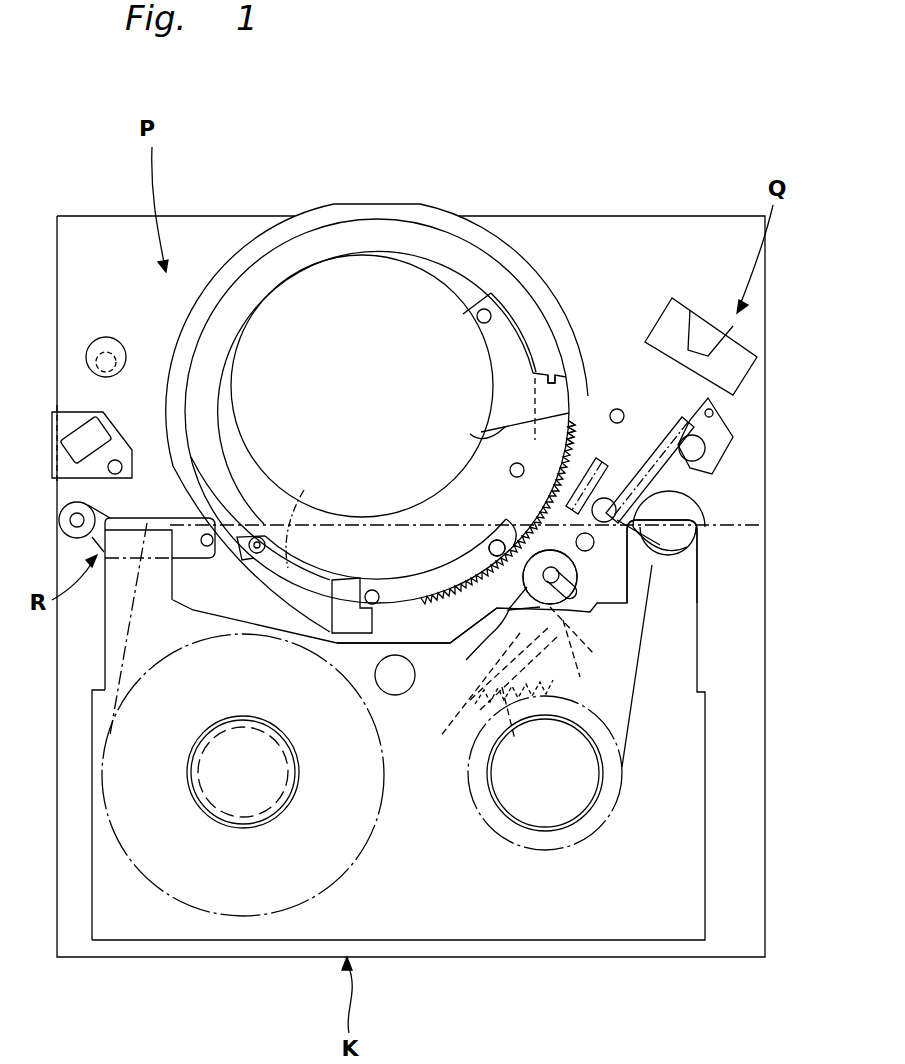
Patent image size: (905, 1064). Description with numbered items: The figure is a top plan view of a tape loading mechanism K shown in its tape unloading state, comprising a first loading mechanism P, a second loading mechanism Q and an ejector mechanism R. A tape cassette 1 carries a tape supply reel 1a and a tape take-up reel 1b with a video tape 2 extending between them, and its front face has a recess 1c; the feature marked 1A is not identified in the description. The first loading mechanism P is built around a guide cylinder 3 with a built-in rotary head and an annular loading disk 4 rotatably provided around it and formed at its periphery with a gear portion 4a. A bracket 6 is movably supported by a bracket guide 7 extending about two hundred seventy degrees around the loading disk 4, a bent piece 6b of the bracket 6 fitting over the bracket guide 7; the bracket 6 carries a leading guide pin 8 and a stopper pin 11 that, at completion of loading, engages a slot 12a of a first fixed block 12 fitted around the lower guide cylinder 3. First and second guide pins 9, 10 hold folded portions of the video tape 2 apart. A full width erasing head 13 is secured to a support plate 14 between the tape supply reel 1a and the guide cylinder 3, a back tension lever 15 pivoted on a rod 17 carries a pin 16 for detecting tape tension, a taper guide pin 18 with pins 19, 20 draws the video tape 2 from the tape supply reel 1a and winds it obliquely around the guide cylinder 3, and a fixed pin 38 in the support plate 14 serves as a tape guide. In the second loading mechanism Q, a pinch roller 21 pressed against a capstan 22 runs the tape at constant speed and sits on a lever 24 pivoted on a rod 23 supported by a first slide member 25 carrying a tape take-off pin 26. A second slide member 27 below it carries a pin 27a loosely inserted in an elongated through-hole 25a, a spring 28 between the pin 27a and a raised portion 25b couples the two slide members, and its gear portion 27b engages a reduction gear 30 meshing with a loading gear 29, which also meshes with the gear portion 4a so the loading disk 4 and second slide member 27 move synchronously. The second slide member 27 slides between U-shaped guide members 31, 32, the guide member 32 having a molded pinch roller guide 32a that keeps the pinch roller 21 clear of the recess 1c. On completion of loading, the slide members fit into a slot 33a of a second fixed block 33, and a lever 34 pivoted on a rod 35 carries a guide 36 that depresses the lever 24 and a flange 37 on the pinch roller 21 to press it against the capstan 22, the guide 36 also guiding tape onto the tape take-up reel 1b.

The tape cassette 1 is at (705, 850).
The supply reel 1A is at (220, 790).
The tape supply reel 1a is at (240, 810).
The tape take-up reel 1b is at (528, 815).
The recess 1c is at (423, 640).
The video tape 2 is at (622, 720).
The guide cylinder 3 is at (390, 272).
The loading disk 4 is at (533, 447).
The gear portion 4a is at (586, 412).
The bracket 6 is at (300, 562).
The bent piece 6b is at (345, 630).
The bracket guide 7 is at (513, 253).
The leading guide pin 8 is at (258, 537).
The first guide pin 9 is at (372, 590).
The second guide pin 10 is at (496, 541).
The stopper pin 11 is at (301, 514).
The first fixed block 12 is at (480, 434).
The slot 12a is at (552, 378).
The full width erasing head 13 is at (100, 428).
The support plate 14 is at (72, 512).
The back tension lever 15 is at (187, 553).
The pin 16 is at (207, 547).
The rod 17 is at (77, 540).
The taper guide pin 18 is at (112, 337).
The pin 19 is at (478, 320).
The pin 20 is at (512, 468).
The pinch roller 21 is at (572, 600).
The capstan 22 is at (618, 408).
The rod 23 is at (627, 490).
The lever 24 is at (584, 480).
The first slide member 25 is at (530, 667).
The elongated through-hole 25a is at (572, 645).
The raised portion 25b is at (470, 700).
The tape take-off pin 26 is at (640, 565).
The second slide member 27 is at (440, 684).
The pin 27a is at (510, 604).
The gear portion 27b is at (660, 545).
The spring 28 is at (517, 727).
The loading gear 29 is at (542, 537).
The reduction gear 30 is at (700, 540).
The guide member 31 is at (489, 547).
The guide member 32 is at (705, 510).
The pinch roller guide 32a is at (660, 555).
The second fixed block 33 is at (688, 304).
The slot 33a is at (700, 352).
The lever 34 is at (720, 440).
The rod 35 is at (704, 409).
The guide 36 is at (705, 456).
The flange 37 is at (588, 593).
The fixed pin 38 is at (120, 478).